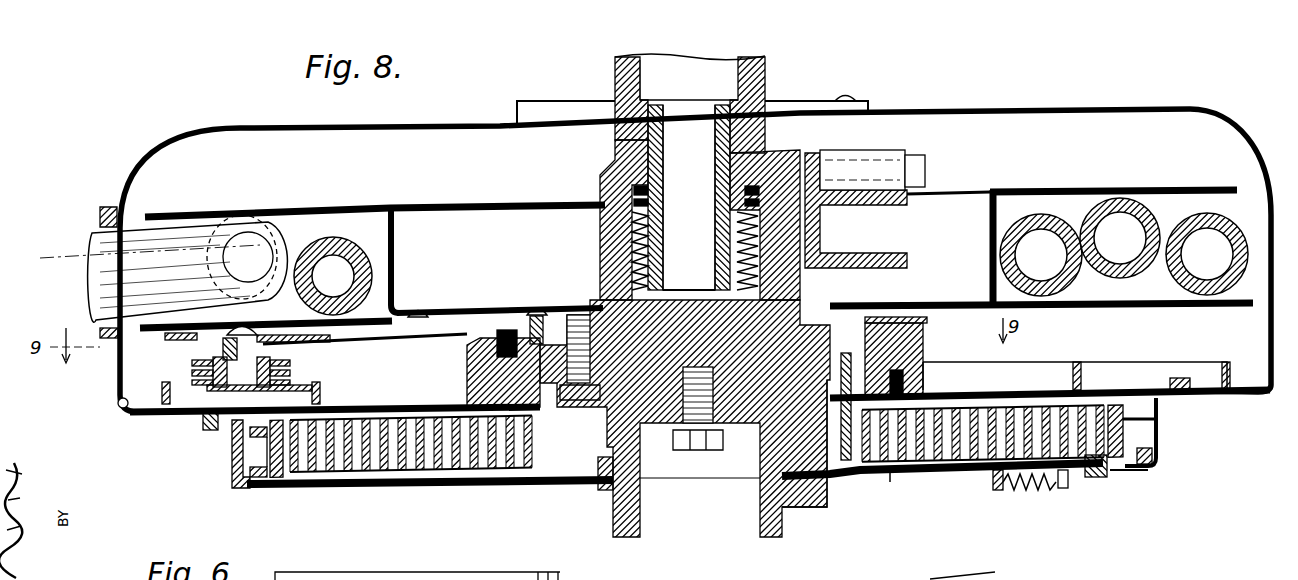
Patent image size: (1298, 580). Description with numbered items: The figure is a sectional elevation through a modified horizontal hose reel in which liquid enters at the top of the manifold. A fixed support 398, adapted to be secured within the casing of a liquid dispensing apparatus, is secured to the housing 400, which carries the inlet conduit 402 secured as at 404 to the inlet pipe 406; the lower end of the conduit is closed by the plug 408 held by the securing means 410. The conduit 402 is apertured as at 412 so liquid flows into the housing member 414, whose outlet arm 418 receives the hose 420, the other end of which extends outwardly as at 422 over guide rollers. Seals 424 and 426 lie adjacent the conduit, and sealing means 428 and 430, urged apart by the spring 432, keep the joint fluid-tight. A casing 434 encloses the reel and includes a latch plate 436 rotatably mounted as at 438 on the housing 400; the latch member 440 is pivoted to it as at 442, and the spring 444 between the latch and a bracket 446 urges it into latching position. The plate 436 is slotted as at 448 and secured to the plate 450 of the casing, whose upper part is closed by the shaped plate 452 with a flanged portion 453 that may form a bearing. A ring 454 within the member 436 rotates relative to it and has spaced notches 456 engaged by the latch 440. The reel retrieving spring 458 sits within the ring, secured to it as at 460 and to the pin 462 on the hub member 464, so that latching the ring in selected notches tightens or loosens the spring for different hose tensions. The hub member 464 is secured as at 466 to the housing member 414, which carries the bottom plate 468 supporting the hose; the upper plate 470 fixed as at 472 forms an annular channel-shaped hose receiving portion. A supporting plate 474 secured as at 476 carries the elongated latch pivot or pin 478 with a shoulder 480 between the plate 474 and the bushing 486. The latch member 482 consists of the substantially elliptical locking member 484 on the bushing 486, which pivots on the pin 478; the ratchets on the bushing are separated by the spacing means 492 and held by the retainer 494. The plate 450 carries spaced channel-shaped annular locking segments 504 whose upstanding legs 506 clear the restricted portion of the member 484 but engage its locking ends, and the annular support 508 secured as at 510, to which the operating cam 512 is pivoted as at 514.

The fixed support 398 is at (783, 520).
The housing 400 is at (648, 470).
The inlet conduit 402 is at (660, 210).
The securing connection 404 is at (650, 110).
The inlet pipe 406 is at (640, 58).
The plug 408 is at (722, 448).
The securing means 410 is at (699, 452).
The aperture 412 is at (725, 250).
The housing member 414 is at (600, 222).
The outlet arm 418 is at (880, 230).
The hose 420 is at (1030, 218).
The outwardly extending hose end 422 is at (98, 250).
The seal 424 is at (668, 185).
The seal 426 is at (690, 290).
The sealing means 428 is at (608, 210).
The sealing means 430 is at (602, 292).
The spring 432 is at (762, 250).
The housing or casing 434 is at (1222, 128).
The latch plate 436 is at (925, 475).
The rotatable mounting 438 is at (565, 486).
The latch member 440 is at (1150, 468).
The latch pivot 442 is at (1095, 478).
The spring 444 is at (1024, 490).
The bracket 446 is at (996, 488).
The slot 448 is at (1160, 455).
The plate 450 is at (1240, 392).
The shaped plate 452 is at (1140, 108).
The flanged portion 453 is at (840, 100).
The ring 454 is at (250, 478).
The notches 456 is at (1150, 440).
The reel retrieving spring 458 is at (890, 482).
The spring end securing point 460 is at (310, 474).
The pin 462 is at (850, 470).
The hub member 464 is at (553, 472).
The hub securing point 466 is at (580, 401).
The bottom plate 468 is at (1035, 308).
The upper plate 470 is at (1130, 190).
The upper plate fixing 472 is at (412, 312).
The supporting plate 474 is at (205, 357).
The supporting plate securing point 476 is at (190, 325).
The latch pivot pin 478 is at (240, 326).
The shoulder 480 is at (195, 372).
The latch member 482 is at (290, 365).
The locking member 484 is at (292, 383).
The bushing 486 is at (300, 360).
The spacing means 492 is at (122, 405).
The retainer 494 is at (212, 432).
The annular locking segments 504 is at (322, 395).
The upstanding legs 506 is at (1080, 372).
The annular support 508 is at (925, 345).
The annular support securing point 510 is at (925, 380).
The operating cam 512 is at (452, 308).
The cam pivot 514 is at (468, 345).